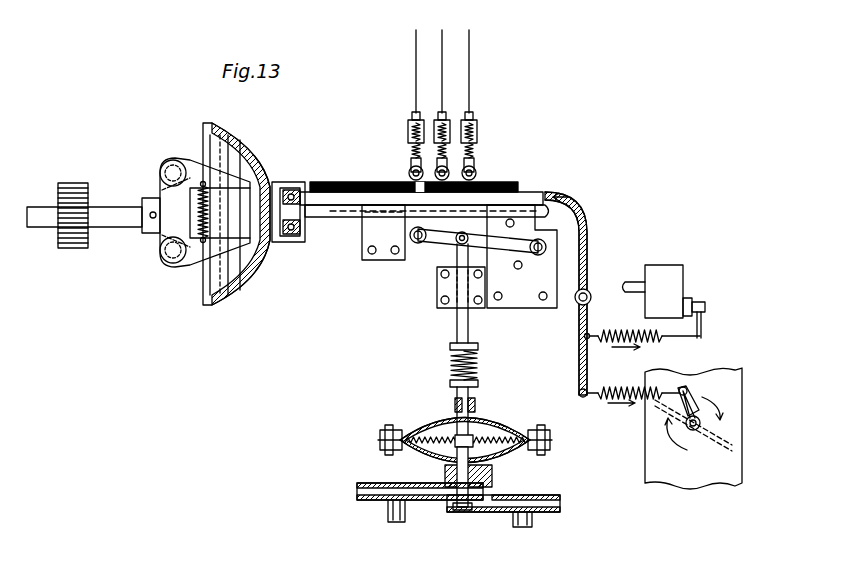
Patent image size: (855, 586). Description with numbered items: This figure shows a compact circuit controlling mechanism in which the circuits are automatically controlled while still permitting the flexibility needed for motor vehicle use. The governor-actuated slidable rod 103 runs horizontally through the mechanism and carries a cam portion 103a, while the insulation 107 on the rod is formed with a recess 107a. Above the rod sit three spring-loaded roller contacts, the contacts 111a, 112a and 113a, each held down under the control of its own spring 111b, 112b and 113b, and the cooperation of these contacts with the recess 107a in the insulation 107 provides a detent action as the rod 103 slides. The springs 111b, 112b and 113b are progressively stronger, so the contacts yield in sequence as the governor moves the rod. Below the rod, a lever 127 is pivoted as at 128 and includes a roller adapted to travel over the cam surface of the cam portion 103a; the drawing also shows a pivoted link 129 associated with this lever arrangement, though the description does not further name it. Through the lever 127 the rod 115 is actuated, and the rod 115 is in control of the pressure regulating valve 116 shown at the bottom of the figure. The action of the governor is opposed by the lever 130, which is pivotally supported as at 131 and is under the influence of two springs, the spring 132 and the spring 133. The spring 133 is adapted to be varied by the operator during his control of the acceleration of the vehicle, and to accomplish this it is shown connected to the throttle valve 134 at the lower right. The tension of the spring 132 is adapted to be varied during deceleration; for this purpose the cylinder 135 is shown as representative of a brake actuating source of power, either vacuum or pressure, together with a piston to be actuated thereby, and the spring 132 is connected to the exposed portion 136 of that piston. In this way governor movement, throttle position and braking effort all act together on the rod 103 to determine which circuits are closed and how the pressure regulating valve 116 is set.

The slidable rod 103 is at (340, 218).
The cam portion 103a is at (413, 220).
The insulation 107 is at (318, 182).
The recess 107a is at (415, 180).
The contact 111a is at (408, 167).
The spring 111b is at (413, 130).
The contact 112a is at (450, 168).
The spring 112b is at (450, 128).
The contact 113a is at (477, 172).
The spring 113b is at (477, 130).
The rod 115 is at (458, 330).
The pressure regulating valve 116 is at (440, 438).
The lever 127 is at (457, 242).
The pivot 128 is at (553, 247).
The lever 129 is at (418, 243).
The lever 130 is at (588, 218).
The pivot 131 is at (590, 290).
The spring 132 is at (598, 345).
The spring 133 is at (602, 400).
The throttle valve 134 is at (740, 394).
The cylinder 135 is at (675, 283).
The exposed portion of the piston 136 is at (705, 308).